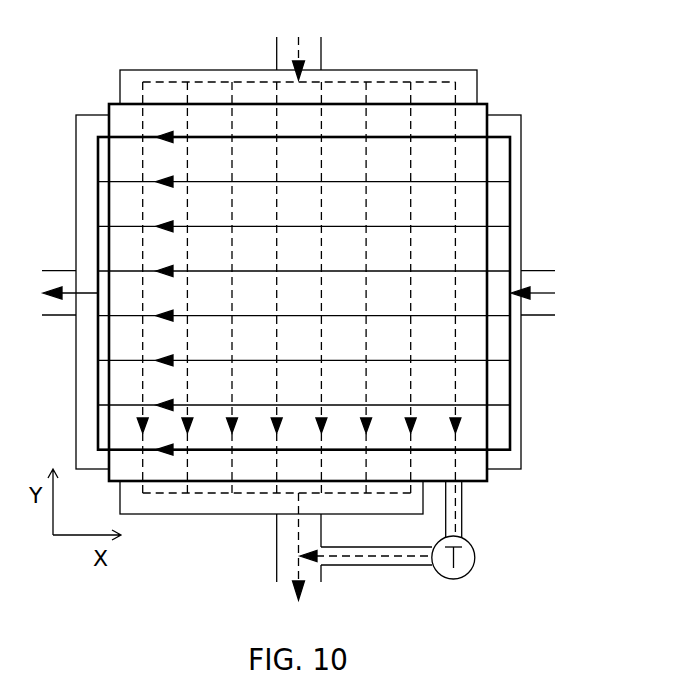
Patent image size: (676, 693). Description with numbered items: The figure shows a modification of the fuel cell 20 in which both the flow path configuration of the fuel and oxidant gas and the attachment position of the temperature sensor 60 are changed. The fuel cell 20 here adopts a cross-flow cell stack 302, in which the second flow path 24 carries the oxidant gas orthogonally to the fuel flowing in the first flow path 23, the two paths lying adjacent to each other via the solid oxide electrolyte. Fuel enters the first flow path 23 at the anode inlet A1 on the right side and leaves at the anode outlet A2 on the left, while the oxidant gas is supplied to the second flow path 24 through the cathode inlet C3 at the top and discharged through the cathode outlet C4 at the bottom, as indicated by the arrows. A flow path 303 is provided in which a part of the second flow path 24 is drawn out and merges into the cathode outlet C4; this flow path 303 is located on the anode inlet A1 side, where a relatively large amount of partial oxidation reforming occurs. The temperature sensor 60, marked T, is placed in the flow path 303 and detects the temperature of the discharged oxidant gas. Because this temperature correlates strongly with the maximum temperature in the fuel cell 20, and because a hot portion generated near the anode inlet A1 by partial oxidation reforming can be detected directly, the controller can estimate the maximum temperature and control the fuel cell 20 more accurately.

The fuel cell 20 is at (86, 66).
The first flow path 23 is at (438, 100).
The second flow path 24 is at (355, 70).
The cell stack 302 is at (489, 103).
The flow path 303 is at (462, 506).
The temperature sensor 60 is at (475, 563).
The cathode inlet C3 is at (275, 52).
The cathode outlet C4 is at (275, 562).
The anode inlet A1 is at (541, 270).
The anode outlet A2 is at (53, 270).